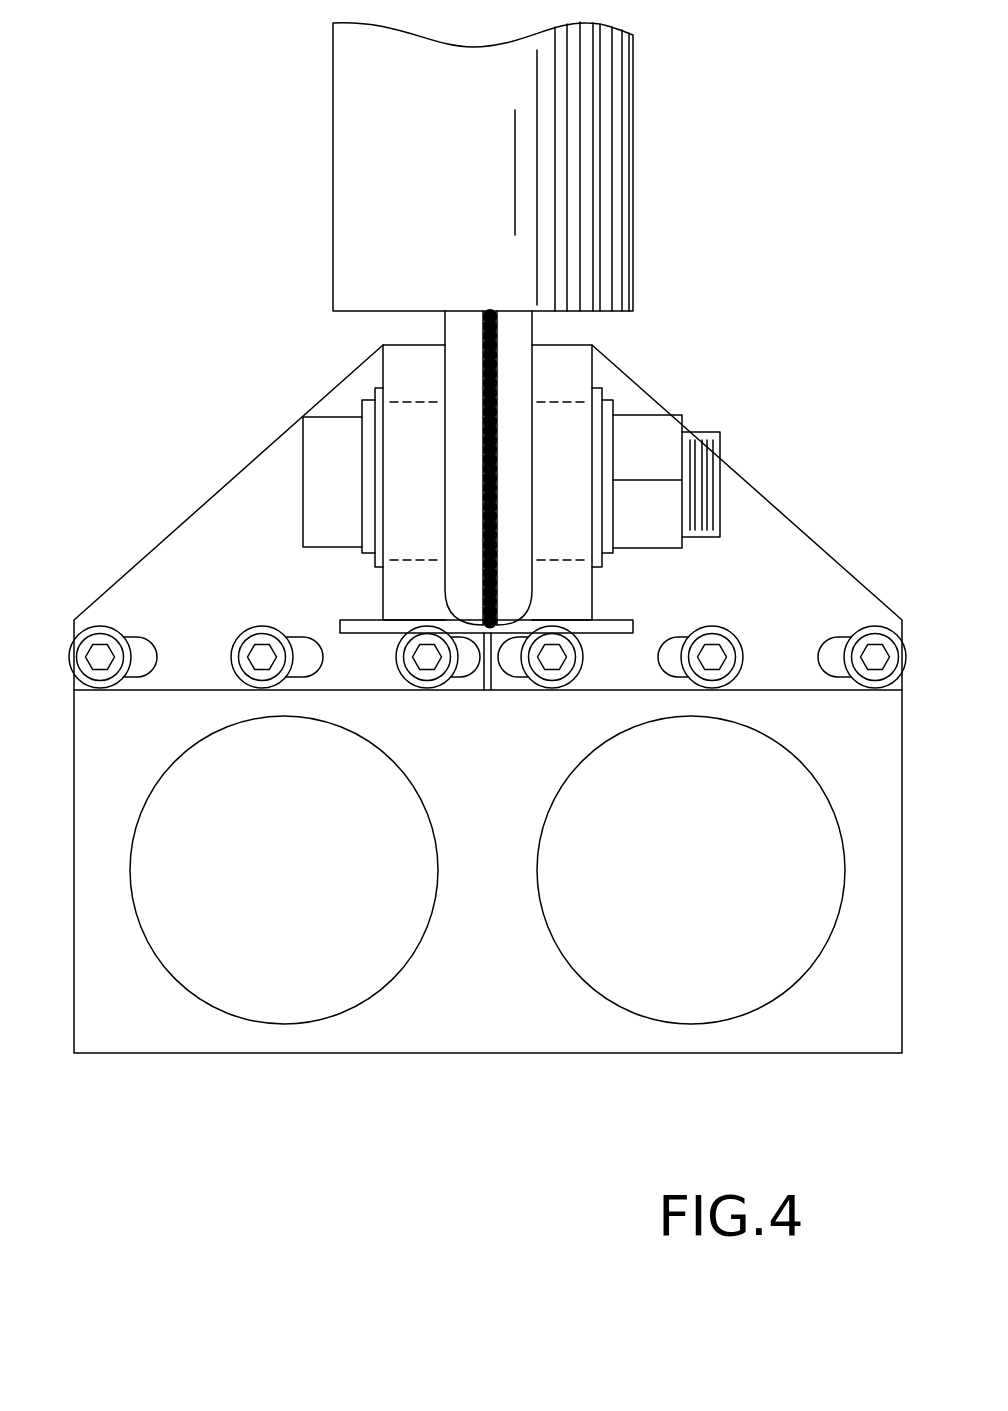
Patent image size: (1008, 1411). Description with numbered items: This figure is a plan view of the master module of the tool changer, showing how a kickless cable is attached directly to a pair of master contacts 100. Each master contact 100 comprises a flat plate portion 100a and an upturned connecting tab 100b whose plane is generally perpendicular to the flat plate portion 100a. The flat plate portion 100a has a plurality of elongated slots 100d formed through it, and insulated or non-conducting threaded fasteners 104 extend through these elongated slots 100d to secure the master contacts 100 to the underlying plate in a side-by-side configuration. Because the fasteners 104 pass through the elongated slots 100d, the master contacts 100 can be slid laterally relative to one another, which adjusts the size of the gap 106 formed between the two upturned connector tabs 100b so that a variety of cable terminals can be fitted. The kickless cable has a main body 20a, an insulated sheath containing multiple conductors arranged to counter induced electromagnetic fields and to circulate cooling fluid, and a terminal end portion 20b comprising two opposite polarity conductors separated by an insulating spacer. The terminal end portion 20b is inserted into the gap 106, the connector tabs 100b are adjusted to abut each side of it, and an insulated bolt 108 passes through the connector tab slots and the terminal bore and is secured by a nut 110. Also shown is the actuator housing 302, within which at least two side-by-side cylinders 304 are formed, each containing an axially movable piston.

The master contact 100 is at (167, 432).
The main body of kickless cable 20a is at (633, 146).
The terminal end portion 20b is at (445, 324).
The flat plate portion 100a is at (768, 537).
The upturned connecting tab 100b is at (570, 372).
The elongated slot 100d is at (305, 637).
The threaded fastener 104 is at (242, 675).
The gap 106 is at (457, 623).
The insulated bolt 108 is at (337, 415).
The nut 110 is at (648, 415).
The housing 302 is at (130, 1053).
The cylinder 304 is at (320, 1023).